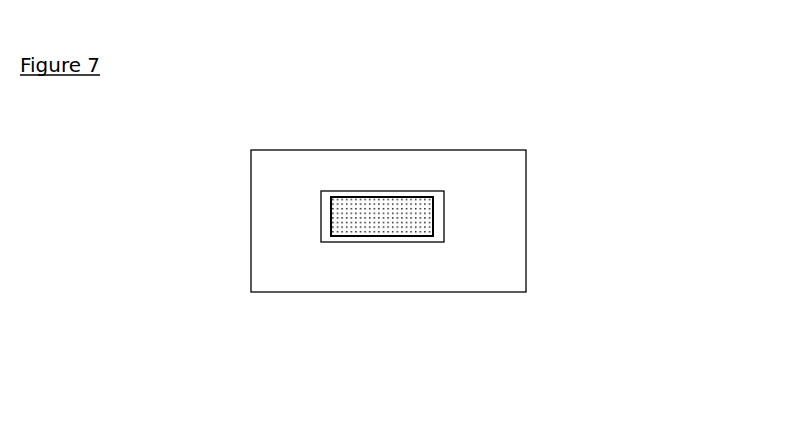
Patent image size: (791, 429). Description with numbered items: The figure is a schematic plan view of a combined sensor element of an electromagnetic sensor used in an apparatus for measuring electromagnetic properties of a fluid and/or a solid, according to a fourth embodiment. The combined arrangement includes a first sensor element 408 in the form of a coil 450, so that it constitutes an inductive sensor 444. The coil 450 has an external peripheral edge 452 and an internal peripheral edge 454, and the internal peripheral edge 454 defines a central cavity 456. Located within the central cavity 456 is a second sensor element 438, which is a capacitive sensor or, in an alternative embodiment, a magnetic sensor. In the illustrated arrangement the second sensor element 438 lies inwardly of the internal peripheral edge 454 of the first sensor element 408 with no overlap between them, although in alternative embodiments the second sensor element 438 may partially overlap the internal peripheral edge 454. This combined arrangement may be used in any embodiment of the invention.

The first sensor element 408 is at (249, 168).
The coil 450 is at (294, 168).
The inductive sensor 444 is at (314, 168).
The external peripheral edge 452 is at (389, 150).
The internal peripheral edge 454 is at (433, 191).
The central cavity 456 is at (444, 220).
The second sensor element 438 is at (372, 215).